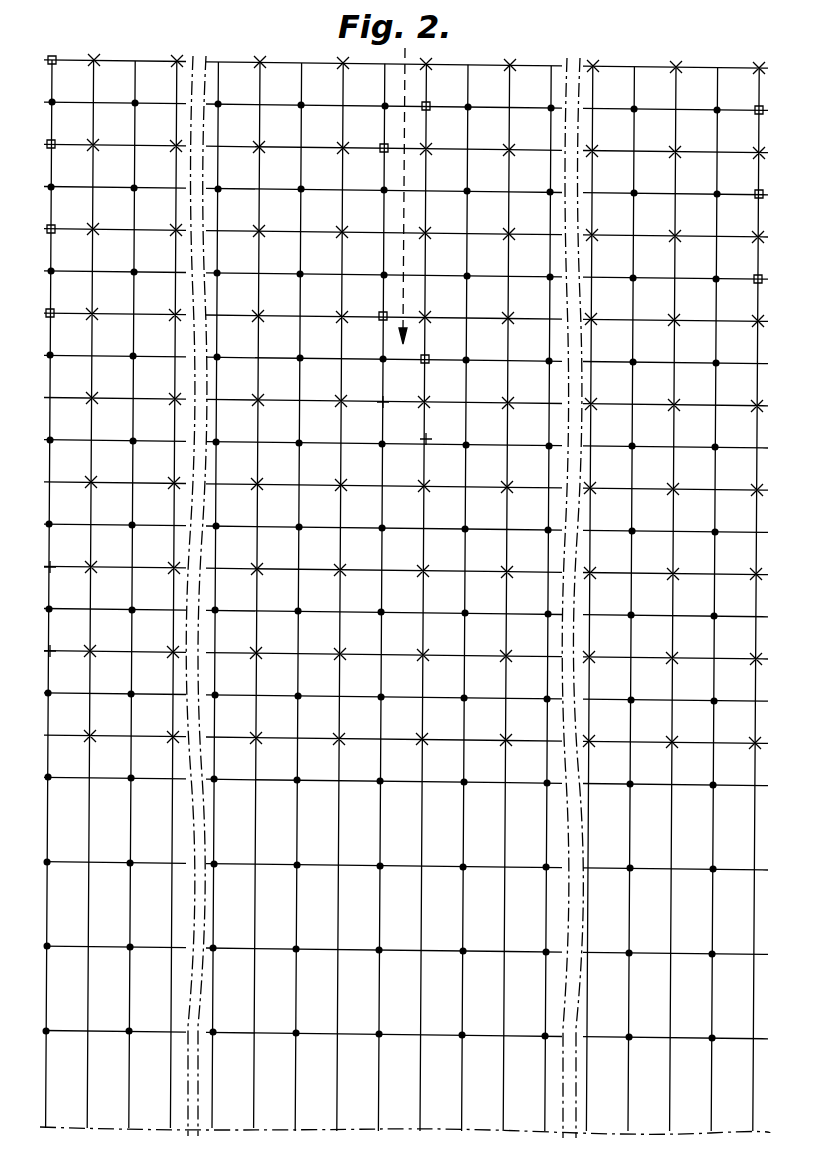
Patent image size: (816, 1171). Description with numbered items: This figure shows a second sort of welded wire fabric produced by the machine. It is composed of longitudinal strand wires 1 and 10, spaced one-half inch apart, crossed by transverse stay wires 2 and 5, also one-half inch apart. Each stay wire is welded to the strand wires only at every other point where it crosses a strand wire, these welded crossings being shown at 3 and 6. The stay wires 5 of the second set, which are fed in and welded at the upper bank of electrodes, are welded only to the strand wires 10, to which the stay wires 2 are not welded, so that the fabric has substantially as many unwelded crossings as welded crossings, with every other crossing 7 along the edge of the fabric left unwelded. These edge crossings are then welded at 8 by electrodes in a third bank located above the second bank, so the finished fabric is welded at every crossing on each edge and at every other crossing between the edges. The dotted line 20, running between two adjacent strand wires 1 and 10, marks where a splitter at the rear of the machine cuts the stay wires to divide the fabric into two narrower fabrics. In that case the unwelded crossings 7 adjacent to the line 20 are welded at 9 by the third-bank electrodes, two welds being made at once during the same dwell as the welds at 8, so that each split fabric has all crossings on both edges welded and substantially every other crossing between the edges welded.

The strand wire 1 is at (383, 84).
The strand wire 10 is at (428, 84).
The stay wire 2 is at (75, 779).
The stay wire 5 is at (68, 736).
The welded point 3 is at (47, 779).
The welded point 6 is at (93, 733).
The unwelded crossing 7 is at (382, 404).
The edge weld 8 is at (48, 146).
The weld adjacent to split line 9 is at (382, 146).
The dotted line 20 is at (407, 59).